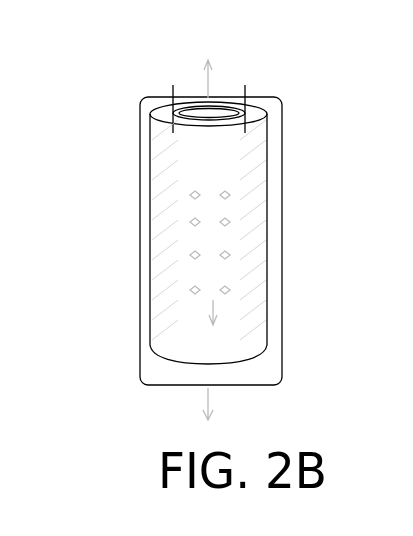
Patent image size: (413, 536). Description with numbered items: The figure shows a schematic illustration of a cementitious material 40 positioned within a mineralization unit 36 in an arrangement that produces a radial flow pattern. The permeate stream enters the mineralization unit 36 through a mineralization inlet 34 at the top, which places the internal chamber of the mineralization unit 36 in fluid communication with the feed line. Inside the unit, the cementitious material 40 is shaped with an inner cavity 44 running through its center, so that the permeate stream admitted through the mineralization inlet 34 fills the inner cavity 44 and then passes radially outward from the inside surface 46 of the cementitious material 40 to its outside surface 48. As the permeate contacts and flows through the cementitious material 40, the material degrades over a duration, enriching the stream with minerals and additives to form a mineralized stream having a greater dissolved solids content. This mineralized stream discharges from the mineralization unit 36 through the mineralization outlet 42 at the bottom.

The mineralization inlet 34 is at (245, 88).
The mineralization unit 36 is at (282, 126).
The cementitious material 40 is at (255, 164).
The mineralization outlet 42 is at (183, 398).
The inner cavity 44 is at (187, 175).
The inside surface 46 is at (243, 233).
The outside surface 48 is at (265, 211).